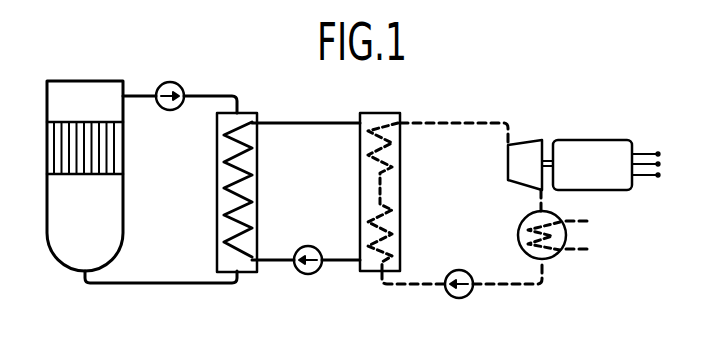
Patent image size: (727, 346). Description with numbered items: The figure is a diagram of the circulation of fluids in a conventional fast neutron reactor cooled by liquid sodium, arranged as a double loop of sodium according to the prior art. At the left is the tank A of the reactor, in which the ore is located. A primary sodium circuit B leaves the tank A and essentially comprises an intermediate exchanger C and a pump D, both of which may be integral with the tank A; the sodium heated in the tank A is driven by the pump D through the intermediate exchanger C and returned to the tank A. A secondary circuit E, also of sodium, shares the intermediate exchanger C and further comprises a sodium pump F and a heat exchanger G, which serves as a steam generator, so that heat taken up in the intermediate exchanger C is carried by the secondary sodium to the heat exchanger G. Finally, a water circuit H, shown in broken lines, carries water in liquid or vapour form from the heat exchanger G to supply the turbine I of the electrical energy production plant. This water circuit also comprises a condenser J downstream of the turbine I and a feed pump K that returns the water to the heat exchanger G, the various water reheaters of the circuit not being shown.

The tank A is at (117, 222).
The primary sodium circuit B is at (190, 287).
The intermediate exchanger C is at (217, 177).
The pump D is at (160, 85).
The secondary circuit E is at (327, 126).
The sodium pump F is at (300, 248).
The heat exchanger G is at (399, 196).
The water circuit H is at (427, 123).
The turbine I is at (518, 170).
The condenser J is at (548, 256).
The feed pump K is at (465, 270).